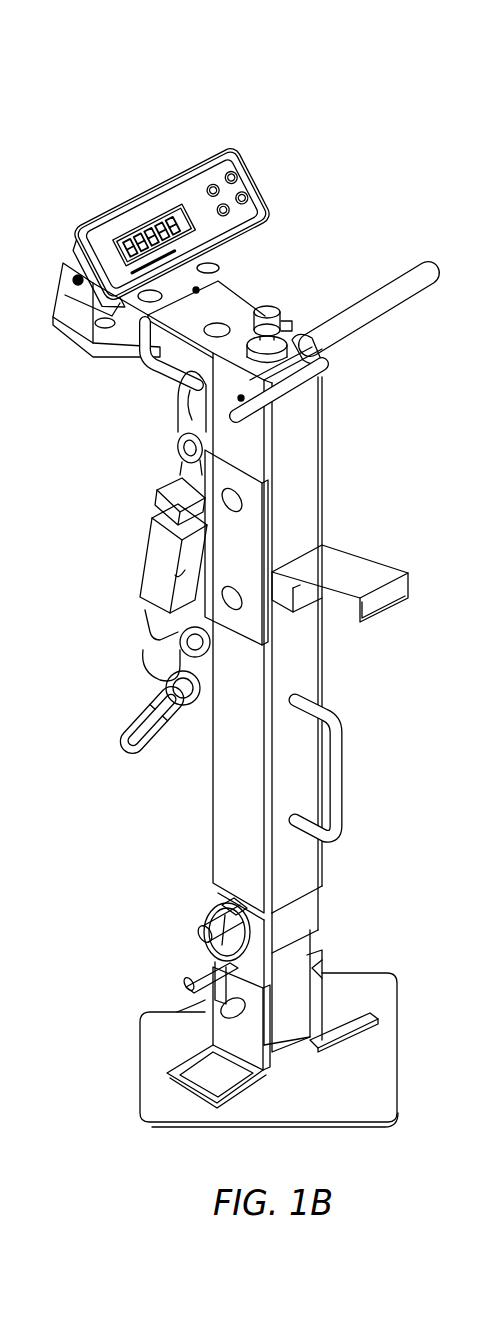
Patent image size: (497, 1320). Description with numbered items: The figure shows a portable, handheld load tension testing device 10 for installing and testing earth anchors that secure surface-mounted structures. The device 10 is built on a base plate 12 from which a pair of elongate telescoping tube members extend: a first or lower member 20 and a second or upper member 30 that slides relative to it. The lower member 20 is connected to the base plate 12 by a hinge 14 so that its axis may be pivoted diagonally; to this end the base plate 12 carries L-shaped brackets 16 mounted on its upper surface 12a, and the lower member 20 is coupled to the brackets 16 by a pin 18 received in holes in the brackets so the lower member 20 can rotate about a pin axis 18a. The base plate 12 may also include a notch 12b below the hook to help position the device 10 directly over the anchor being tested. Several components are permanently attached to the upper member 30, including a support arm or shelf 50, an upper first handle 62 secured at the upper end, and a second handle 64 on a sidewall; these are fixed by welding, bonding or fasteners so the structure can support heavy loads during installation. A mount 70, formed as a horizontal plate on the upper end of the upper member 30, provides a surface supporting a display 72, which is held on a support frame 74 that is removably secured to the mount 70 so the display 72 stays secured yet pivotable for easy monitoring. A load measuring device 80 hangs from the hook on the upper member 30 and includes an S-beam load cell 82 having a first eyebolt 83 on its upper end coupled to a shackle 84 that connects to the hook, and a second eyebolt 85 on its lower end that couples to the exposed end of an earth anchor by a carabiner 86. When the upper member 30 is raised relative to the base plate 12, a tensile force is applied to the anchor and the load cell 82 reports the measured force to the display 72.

The load tension testing device 10 is at (293, 142).
The base plate 12 is at (271, 1059).
The upper surface 12a is at (355, 1092).
The notch 12b is at (177, 1012).
The hinge 14 is at (222, 1012).
The brackets 16 is at (268, 1062).
The pin 18 is at (197, 972).
The pin axis 18a is at (323, 960).
The lower member 20 is at (320, 939).
The upper member 30 is at (210, 800).
The support arm 50 is at (362, 575).
The first handle 62 is at (392, 275).
The second handle 64 is at (345, 788).
The mount 70 is at (183, 340).
The display 72 is at (170, 173).
The support frame 74 is at (285, 270).
The load measuring device 80 is at (124, 545).
The S-beam load cell 82 is at (145, 548).
The first eyebolt 83 is at (177, 443).
The shackle 84 is at (182, 417).
The second eyebolt 85 is at (150, 635).
The carabiner 86 is at (125, 732).